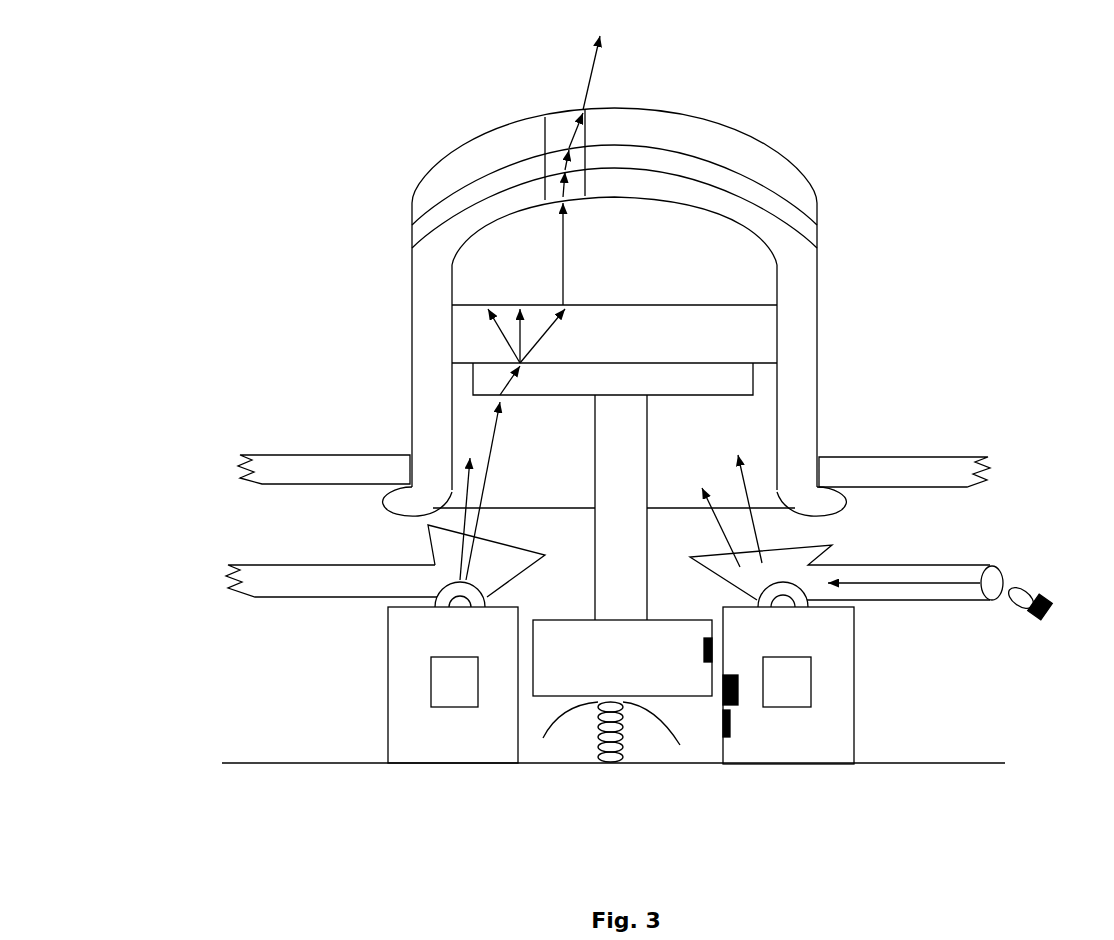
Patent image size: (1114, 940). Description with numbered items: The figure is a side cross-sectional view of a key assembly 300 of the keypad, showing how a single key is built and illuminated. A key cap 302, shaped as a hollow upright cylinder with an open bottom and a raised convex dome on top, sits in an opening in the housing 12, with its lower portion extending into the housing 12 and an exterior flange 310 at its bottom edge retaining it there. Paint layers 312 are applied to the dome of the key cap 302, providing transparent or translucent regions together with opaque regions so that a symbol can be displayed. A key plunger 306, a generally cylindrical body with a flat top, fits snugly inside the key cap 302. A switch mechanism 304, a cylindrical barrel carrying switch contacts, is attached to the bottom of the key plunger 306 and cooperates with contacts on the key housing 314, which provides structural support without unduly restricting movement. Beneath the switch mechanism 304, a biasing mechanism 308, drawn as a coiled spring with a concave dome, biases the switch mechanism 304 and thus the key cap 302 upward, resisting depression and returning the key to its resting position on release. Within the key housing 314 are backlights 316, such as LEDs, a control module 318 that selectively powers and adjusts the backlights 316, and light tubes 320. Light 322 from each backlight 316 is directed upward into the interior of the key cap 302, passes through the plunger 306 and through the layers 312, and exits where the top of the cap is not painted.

The key assembly 300 is at (315, 158).
The key cap 302 is at (415, 298).
The switch mechanism 304 is at (622, 658).
The key plunger 306 is at (757, 436).
The biasing mechanism 308 is at (648, 752).
The exterior flange 310 is at (402, 503).
The paint layer 312 is at (825, 198).
The key housing 314 is at (415, 752).
The backlight 316 is at (458, 603).
The control module 318 is at (483, 690).
The light tube 320 is at (638, 577).
The light 322 is at (611, 305).
The housing 12 is at (610, 481).